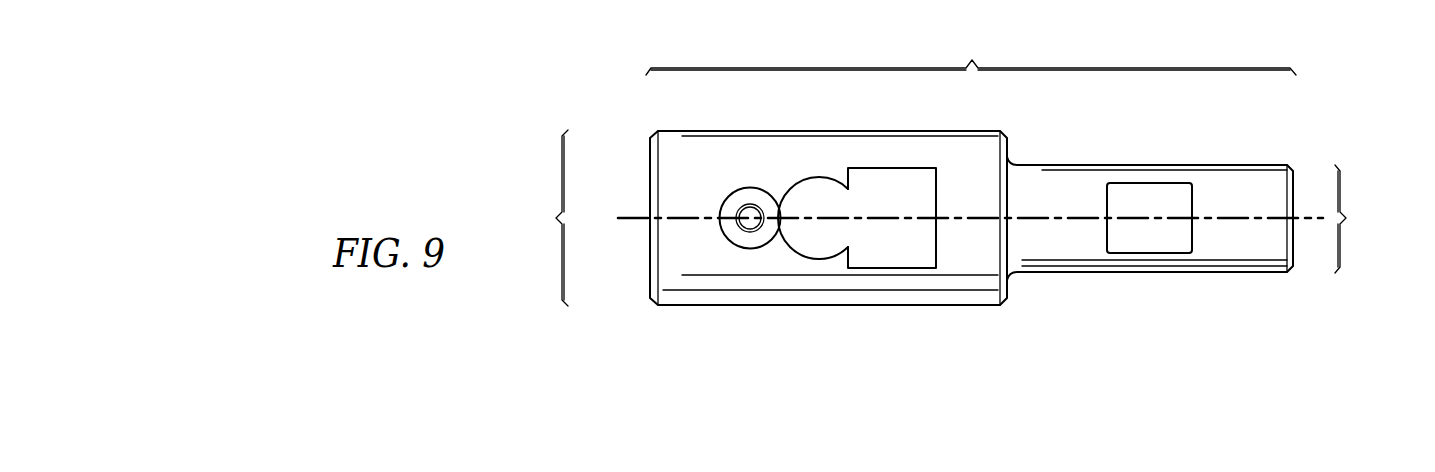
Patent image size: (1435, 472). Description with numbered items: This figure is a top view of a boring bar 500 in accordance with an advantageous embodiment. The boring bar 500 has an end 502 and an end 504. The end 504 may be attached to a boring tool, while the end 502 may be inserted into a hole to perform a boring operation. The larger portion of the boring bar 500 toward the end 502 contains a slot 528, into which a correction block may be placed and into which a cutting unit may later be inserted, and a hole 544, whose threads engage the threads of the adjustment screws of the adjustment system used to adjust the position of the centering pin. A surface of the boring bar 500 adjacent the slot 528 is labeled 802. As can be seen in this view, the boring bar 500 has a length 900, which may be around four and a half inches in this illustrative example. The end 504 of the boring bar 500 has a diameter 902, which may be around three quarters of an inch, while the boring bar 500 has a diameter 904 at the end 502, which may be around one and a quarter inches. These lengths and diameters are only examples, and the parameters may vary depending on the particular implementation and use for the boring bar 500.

The boring bar 500 is at (982, 203).
The end 502 is at (650, 160).
The end 504 is at (1293, 192).
The slot 528 is at (905, 170).
The hole 544 is at (752, 208).
The side wall surface 802 is at (676, 190).
The length 900 is at (971, 53).
The diameter 902 is at (1363, 219).
The diameter 904 is at (540, 218).